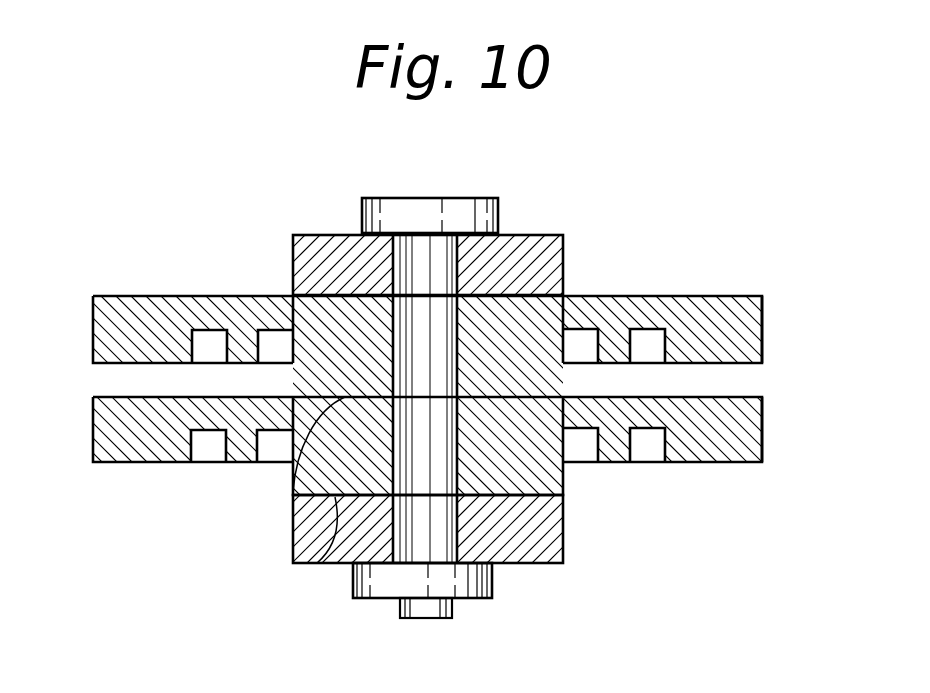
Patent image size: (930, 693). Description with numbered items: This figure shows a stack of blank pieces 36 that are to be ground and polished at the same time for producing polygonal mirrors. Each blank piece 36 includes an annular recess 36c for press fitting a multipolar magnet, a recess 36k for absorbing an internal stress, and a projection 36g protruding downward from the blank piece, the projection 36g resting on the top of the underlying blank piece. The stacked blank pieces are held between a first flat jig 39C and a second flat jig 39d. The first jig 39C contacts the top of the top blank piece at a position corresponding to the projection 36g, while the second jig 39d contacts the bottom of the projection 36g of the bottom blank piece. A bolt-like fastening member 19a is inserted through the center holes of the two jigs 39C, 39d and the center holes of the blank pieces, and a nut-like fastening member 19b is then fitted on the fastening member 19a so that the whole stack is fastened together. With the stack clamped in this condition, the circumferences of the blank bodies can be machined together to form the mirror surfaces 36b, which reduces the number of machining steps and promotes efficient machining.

The bolt-like fastening member 19a is at (468, 197).
The nut-like fastening member 19b is at (472, 600).
The first flat jig 39C is at (527, 233).
The second flat jig 39d is at (537, 565).
The blank piece 36 is at (632, 296).
The mirror surface 36b is at (763, 303).
The recess 36k is at (205, 353).
The annular recess 36c is at (275, 350).
The projection 36g is at (292, 494).